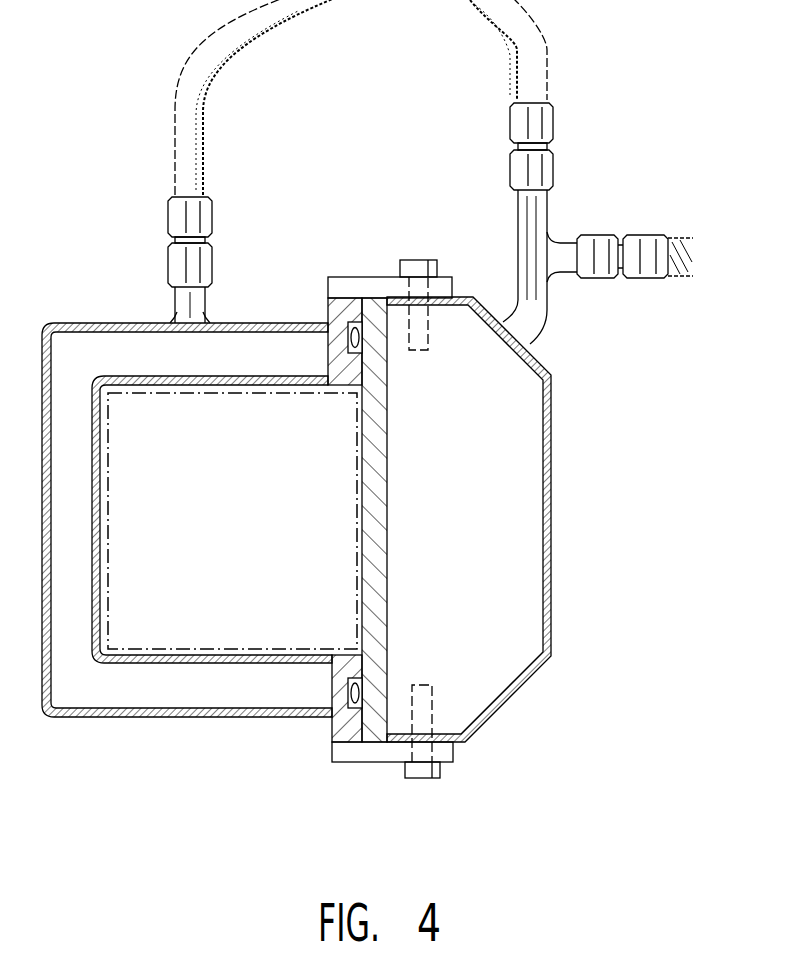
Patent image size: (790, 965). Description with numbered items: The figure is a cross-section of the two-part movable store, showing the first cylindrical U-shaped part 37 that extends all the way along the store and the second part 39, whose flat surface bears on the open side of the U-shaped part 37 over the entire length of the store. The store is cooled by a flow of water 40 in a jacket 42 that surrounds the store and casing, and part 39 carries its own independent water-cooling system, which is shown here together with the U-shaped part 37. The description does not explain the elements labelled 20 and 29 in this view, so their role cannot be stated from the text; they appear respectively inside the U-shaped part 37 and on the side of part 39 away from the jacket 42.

The heating element / inner component 20 is at (228, 652).
The housing 29 is at (551, 519).
The cylindrical U-shaped part 37 is at (93, 404).
The second part 39 is at (376, 556).
The flow of water 40 is at (204, 306).
The jacket 42 is at (47, 716).